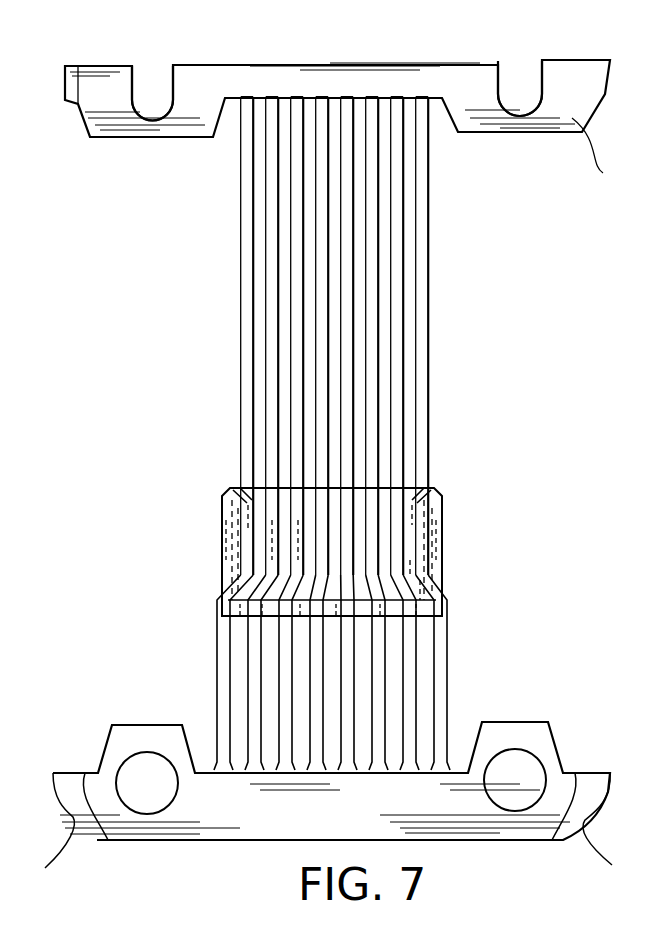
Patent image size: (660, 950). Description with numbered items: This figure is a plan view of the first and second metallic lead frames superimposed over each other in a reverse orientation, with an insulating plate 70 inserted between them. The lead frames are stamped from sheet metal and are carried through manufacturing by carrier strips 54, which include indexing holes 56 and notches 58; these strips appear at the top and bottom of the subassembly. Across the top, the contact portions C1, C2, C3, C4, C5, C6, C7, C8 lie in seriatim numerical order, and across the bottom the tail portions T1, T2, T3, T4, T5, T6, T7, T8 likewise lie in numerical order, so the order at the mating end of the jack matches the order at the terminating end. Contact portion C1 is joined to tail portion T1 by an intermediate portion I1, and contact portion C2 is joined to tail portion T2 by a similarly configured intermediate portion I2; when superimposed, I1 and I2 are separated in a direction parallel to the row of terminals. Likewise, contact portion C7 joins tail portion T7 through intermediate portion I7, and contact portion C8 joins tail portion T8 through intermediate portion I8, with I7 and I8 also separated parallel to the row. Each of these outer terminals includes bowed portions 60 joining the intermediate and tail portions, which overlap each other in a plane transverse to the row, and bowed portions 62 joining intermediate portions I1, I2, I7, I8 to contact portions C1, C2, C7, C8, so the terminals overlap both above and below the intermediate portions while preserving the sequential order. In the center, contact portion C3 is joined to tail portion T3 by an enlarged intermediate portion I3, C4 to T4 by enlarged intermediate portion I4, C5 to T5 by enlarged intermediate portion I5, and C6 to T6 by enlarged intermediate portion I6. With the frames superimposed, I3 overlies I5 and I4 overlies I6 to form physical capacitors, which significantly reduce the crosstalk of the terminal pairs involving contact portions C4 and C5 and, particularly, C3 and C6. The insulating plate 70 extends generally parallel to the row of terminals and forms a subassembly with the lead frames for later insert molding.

The carrier strip 54 is at (40, 870).
The indexing hole 56 is at (137, 770).
The notch 58 is at (135, 85).
The bowed portion 60 is at (253, 587).
The bowed portion 62 is at (247, 497).
The insulating plate 70 is at (443, 497).
The contact portion C1 is at (250, 145).
The contact portion C2 is at (275, 175).
The contact portion C3 is at (296, 215).
The contact portion C4 is at (325, 260).
The contact portion C5 is at (348, 325).
The contact portion C6 is at (378, 270).
The contact portion C7 is at (400, 237).
The contact portion C8 is at (427, 190).
The intermediate portion I1 is at (253, 520).
The intermediate portion I2 is at (232, 540).
The enlarged intermediate portion I3 is at (262, 560).
The enlarged intermediate portion I4 is at (258, 562).
The enlarged intermediate portion I5 is at (452, 567).
The enlarged intermediate portion I6 is at (447, 593).
The intermediate portion I7 is at (433, 512).
The intermediate portion I8 is at (445, 538).
The tail portion T1 is at (225, 628).
The tail portion T2 is at (260, 650).
The tail portion T3 is at (290, 660).
The tail portion T4 is at (318, 687).
The tail portion T5 is at (350, 700).
The tail portion T6 is at (380, 685).
The tail portion T7 is at (408, 665).
The tail portion T8 is at (438, 643).